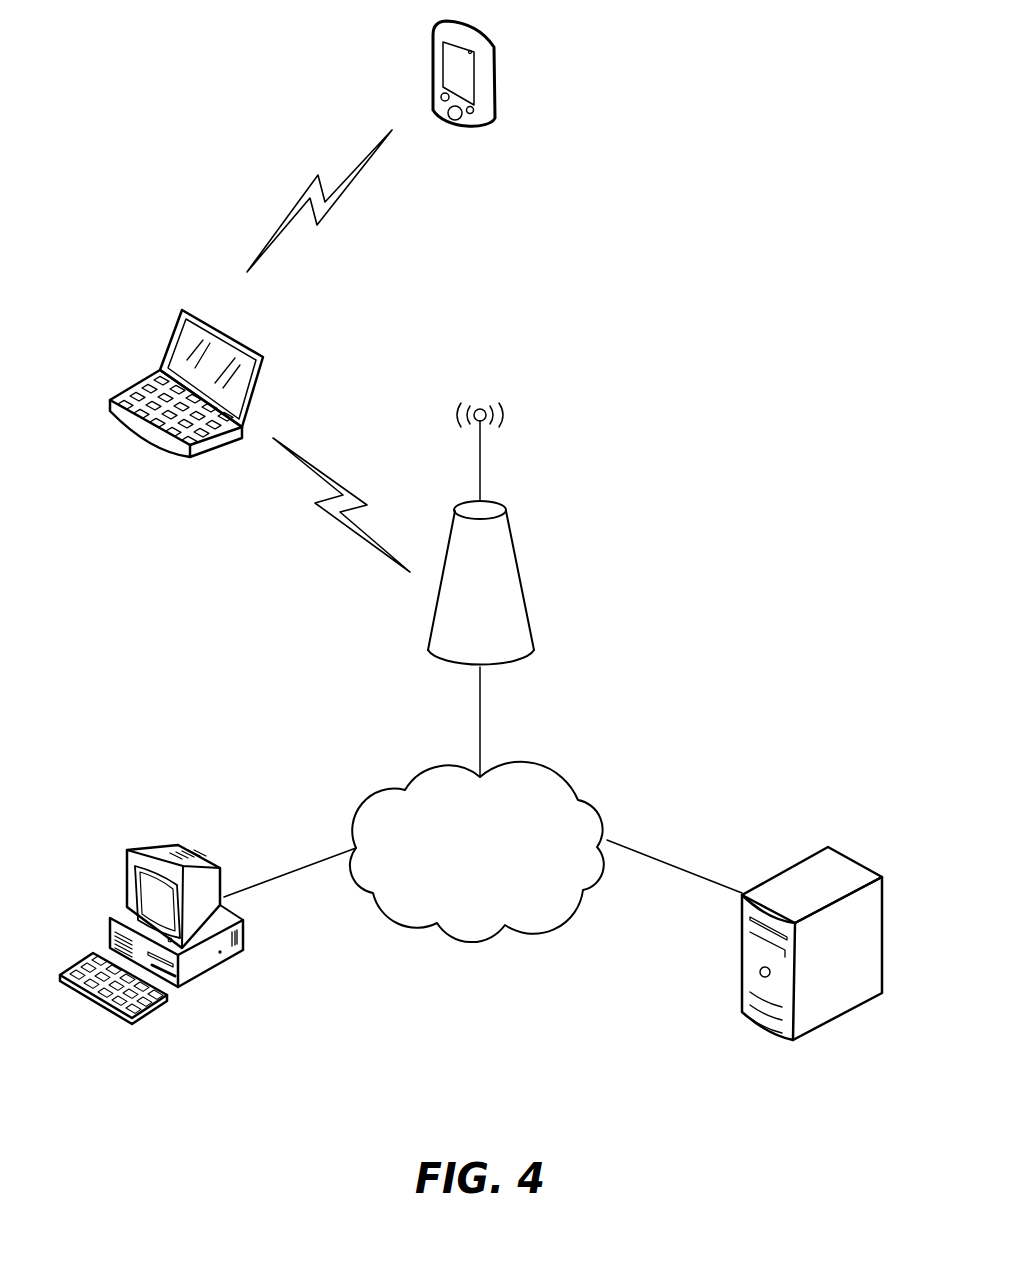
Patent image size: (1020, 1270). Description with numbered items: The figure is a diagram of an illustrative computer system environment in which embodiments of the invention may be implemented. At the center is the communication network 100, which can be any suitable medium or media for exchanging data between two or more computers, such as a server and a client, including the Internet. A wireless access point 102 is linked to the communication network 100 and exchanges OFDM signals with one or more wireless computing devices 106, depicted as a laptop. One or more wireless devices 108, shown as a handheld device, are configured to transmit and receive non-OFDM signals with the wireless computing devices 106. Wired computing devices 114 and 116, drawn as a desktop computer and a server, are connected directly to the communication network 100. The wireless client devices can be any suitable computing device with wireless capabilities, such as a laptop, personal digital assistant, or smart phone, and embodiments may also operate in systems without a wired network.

The communication network 100 is at (413, 777).
The wireless access point 102 is at (489, 400).
The wireless computing device 106 is at (173, 328).
The wireless device 108 is at (495, 58).
The wired computing device 114 is at (140, 845).
The wired computing device 116 is at (810, 855).